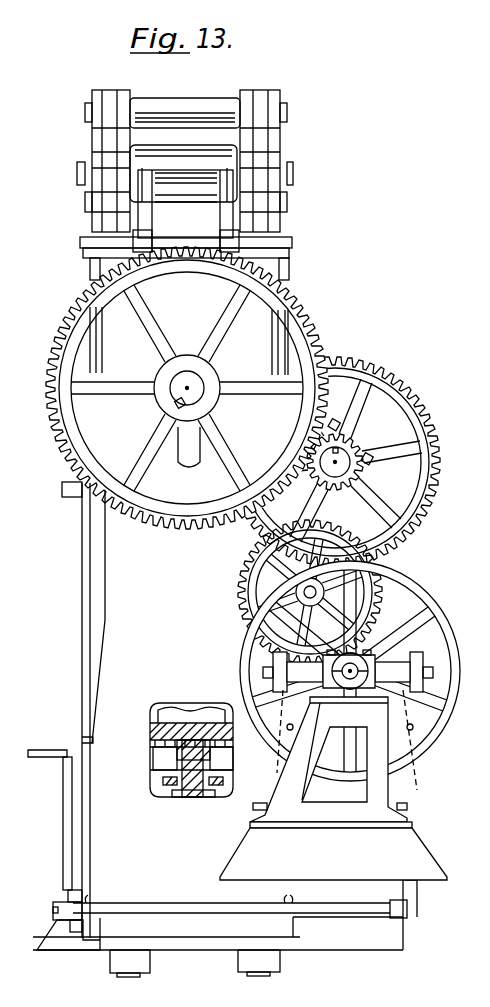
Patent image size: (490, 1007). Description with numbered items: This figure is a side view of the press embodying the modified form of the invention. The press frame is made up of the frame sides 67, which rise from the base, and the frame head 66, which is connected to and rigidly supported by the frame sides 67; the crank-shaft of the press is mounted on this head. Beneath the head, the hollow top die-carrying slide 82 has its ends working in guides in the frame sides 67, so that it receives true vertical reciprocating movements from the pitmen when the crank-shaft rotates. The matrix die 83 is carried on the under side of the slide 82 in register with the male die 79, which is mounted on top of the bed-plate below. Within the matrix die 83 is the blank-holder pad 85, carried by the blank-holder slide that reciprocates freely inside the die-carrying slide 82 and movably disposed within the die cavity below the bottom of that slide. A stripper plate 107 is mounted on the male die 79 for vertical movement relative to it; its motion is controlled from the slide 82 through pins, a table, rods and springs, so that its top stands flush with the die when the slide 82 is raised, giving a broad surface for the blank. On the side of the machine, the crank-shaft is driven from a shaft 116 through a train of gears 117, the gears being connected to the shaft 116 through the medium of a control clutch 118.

The frame head 66 is at (162, 213).
The frame sides 67 is at (130, 570).
The male die 79 is at (190, 778).
The die-carrying slide 82 is at (185, 756).
The matrix die 83 is at (175, 757).
The blank-holder pad 85 is at (226, 743).
The stripper plate 107 is at (167, 786).
The shaft 116 is at (348, 690).
The train of gears 117 is at (390, 553).
The control clutch 118 is at (373, 648).